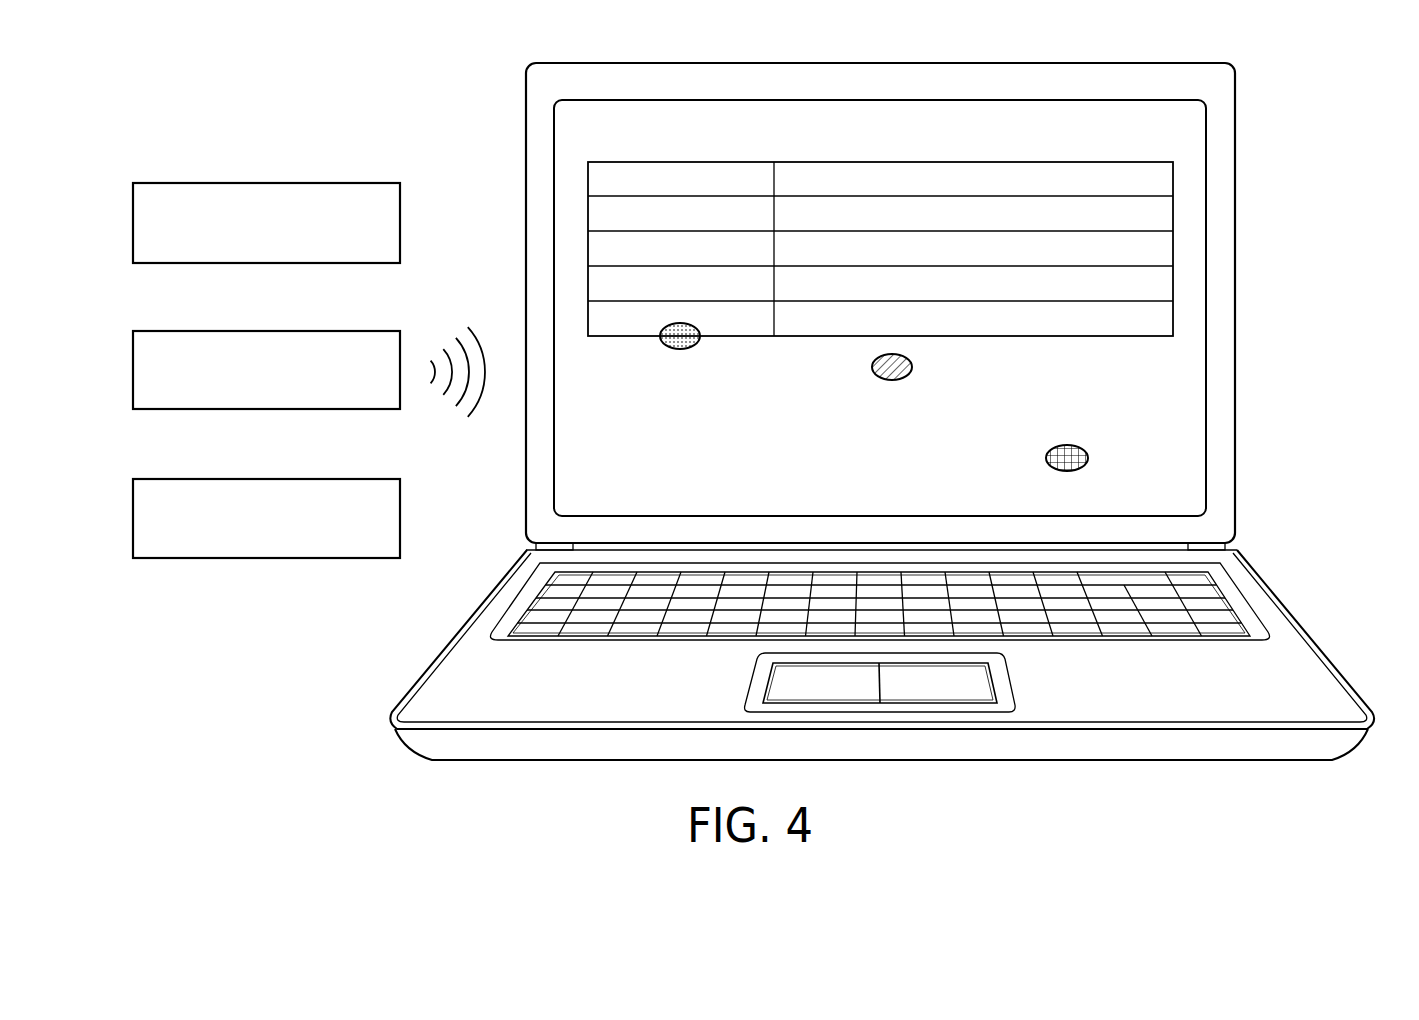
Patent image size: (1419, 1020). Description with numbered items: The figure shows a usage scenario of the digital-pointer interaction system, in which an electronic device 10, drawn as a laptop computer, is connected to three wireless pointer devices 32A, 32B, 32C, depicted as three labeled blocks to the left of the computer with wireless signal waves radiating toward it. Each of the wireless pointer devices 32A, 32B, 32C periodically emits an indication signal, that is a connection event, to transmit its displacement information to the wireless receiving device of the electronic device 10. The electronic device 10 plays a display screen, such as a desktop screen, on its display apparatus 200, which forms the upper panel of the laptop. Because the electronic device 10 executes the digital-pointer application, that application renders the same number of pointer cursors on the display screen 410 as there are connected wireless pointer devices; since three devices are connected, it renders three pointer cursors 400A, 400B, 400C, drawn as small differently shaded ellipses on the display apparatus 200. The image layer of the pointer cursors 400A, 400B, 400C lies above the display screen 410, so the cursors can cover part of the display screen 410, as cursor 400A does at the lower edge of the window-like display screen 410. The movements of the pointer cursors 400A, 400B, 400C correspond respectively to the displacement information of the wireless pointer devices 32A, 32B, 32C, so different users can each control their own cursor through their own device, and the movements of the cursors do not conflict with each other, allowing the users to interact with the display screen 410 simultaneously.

The electronic device 10 is at (1125, 62).
The display apparatus 200 is at (1207, 307).
The display screen 410 is at (1093, 163).
The pointer cursor 400A is at (681, 350).
The pointer cursor 400B is at (893, 380).
The pointer cursor 400C is at (1066, 444).
The wireless pointer device 32A is at (134, 183).
The wireless pointer device 32B is at (134, 331).
The wireless pointer device 32C is at (134, 479).